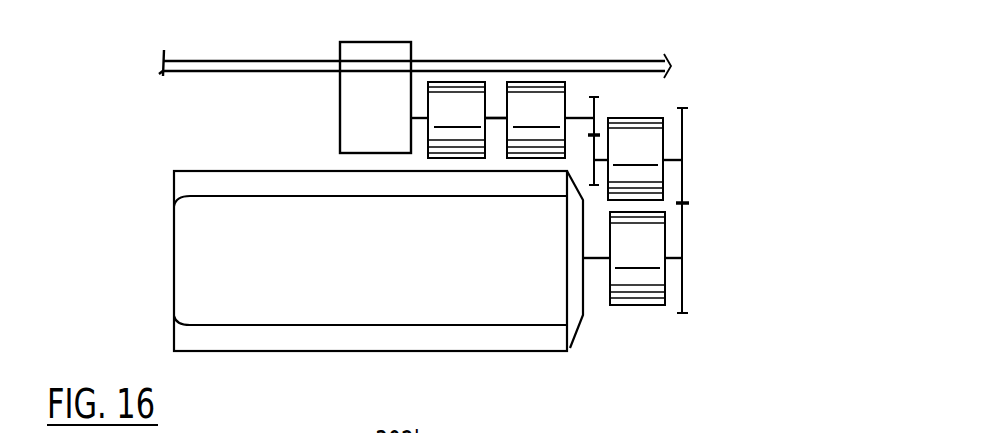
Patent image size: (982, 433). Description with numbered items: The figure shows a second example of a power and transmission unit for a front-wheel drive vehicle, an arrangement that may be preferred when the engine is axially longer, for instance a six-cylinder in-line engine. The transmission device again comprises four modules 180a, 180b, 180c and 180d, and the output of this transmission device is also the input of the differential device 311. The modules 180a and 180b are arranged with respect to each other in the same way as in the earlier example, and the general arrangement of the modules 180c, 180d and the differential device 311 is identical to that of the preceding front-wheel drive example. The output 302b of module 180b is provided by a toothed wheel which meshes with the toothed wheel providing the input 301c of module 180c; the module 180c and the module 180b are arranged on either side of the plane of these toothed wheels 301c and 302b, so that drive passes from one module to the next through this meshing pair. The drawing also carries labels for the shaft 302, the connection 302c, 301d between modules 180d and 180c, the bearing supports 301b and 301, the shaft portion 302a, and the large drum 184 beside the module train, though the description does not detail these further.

The drum 184 is at (573, 337).
The differential device 311 is at (340, 135).
The shaft 302 is at (420, 117).
The module 180d is at (465, 80).
The module 180c is at (543, 80).
The shaft 302c is at (497, 120).
The bearing 301d is at (497, 120).
The input of module 180c 301c is at (597, 107).
The module 180b is at (647, 118).
The output of module 180b 302b is at (600, 160).
The bearing 301b is at (683, 175).
The shaft 302a is at (685, 228).
The module 180a is at (645, 305).
The bearing 301 is at (597, 260).